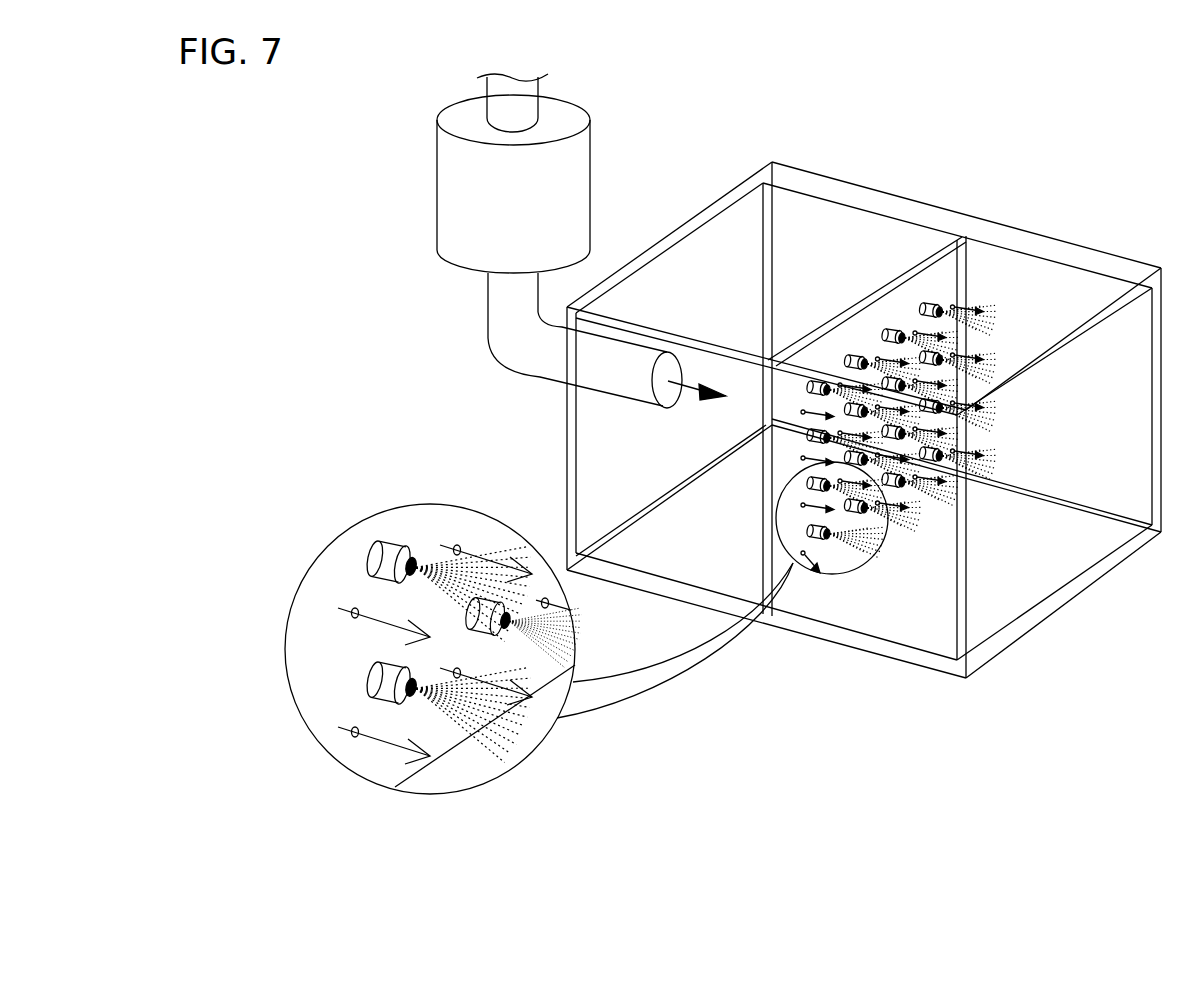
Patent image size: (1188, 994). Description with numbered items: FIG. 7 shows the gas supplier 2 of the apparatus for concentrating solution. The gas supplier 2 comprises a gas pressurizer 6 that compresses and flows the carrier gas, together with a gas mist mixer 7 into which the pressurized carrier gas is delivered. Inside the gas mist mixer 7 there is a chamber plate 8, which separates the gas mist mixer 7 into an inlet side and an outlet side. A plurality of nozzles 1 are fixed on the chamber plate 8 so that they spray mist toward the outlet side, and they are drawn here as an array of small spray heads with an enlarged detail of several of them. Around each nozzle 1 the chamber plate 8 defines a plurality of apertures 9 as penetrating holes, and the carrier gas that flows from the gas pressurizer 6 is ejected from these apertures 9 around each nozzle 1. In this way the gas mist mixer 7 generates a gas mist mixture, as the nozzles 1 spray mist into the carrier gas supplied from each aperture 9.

The nozzle 1 is at (858, 356).
The gas supplier 2 is at (840, 120).
The gas pressurizer 6 is at (558, 198).
The gas mist mixer 7 is at (887, 176).
The chamber plate 8 is at (805, 458).
The aperture 9 is at (798, 412).